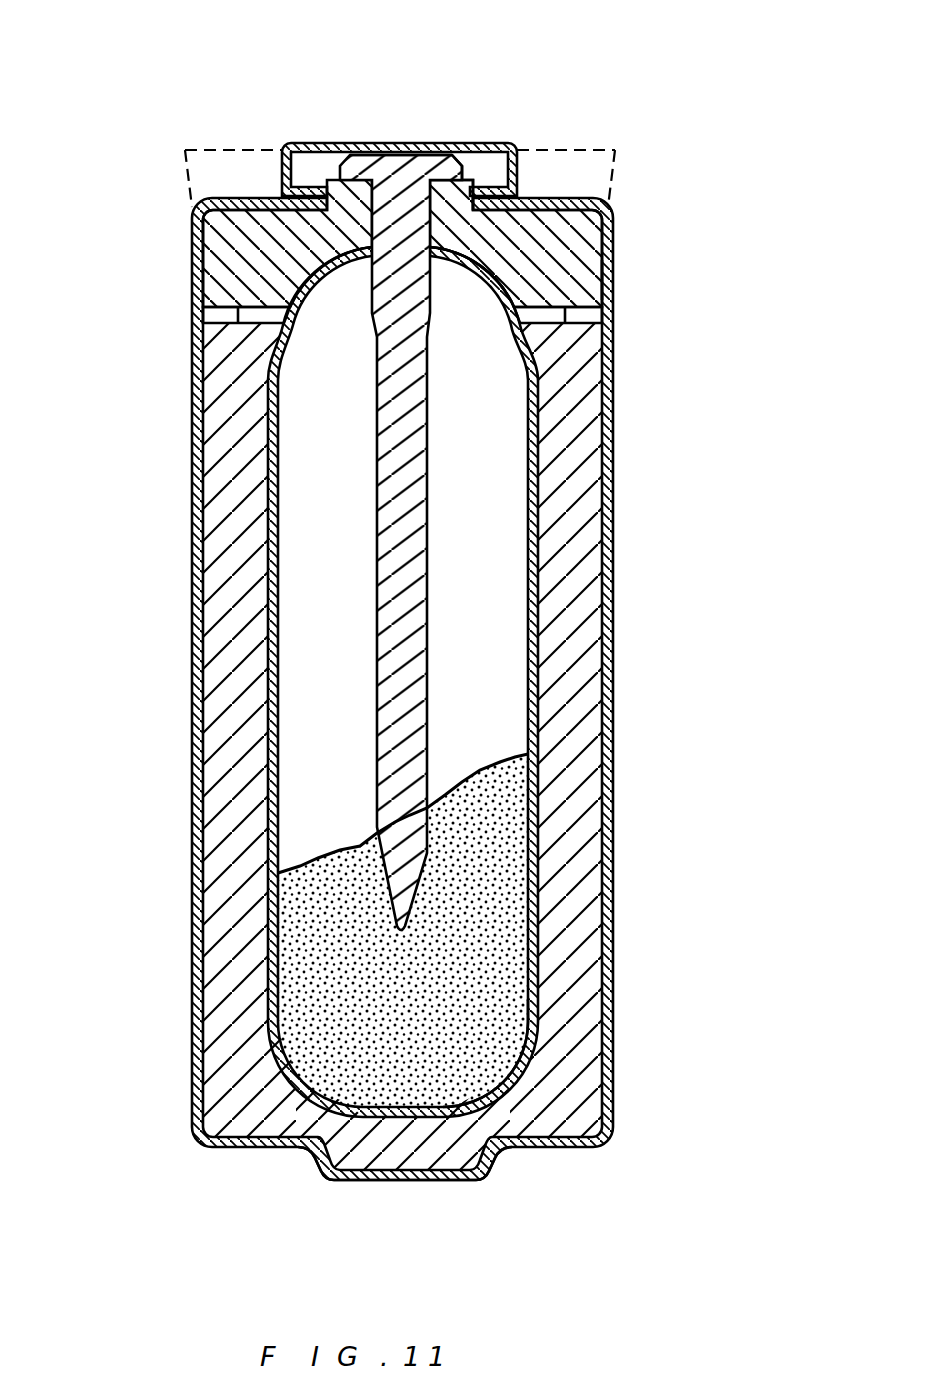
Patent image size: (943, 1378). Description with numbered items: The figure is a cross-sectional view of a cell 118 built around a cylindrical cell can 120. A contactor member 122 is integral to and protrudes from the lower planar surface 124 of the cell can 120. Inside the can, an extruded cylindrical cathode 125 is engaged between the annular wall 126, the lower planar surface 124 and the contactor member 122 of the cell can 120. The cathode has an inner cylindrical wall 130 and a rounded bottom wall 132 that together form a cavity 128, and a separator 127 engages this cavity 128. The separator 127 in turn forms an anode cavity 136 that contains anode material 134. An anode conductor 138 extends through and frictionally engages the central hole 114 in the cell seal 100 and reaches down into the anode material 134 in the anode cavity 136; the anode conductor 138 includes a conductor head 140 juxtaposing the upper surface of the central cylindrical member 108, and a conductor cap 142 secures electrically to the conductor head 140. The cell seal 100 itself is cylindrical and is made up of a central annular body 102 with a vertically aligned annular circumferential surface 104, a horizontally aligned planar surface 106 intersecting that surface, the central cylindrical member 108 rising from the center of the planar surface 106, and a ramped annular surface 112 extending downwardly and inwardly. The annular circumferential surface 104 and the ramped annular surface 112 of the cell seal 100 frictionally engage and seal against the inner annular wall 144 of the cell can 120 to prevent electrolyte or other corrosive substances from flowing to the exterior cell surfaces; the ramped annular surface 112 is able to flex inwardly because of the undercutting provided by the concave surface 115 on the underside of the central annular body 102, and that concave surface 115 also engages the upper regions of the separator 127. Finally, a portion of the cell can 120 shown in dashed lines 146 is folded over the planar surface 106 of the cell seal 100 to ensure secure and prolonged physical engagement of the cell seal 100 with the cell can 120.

The cell seal 100 is at (608, 260).
The central annular body 102 is at (215, 247).
The annular circumferential surface 104 is at (605, 235).
The planar surface 106 is at (283, 222).
The central cylindrical member 108 is at (452, 182).
The ramped annular surface 112 is at (595, 298).
The central hole 114 is at (457, 263).
The concave surface 115 is at (308, 295).
The cell 118 is at (640, 532).
The cell can 120 is at (270, 335).
The contactor member 122 is at (447, 1185).
The lower planar surface 124 is at (547, 1120).
The extruded cylindrical cathode 125 is at (220, 736).
The annular wall 126 is at (612, 830).
The separator 127 is at (278, 390).
The cavity 128 is at (248, 886).
The inner cylindrical wall 130 is at (280, 978).
The rounded bottom wall 132 is at (367, 1100).
The anode material 134 is at (522, 1018).
The anode cavity 136 is at (325, 1057).
The anode conductor 138 is at (432, 505).
The conductor head 140 is at (368, 165).
The conductor cap 142 is at (500, 146).
The inner annular wall 144 is at (610, 270).
The dashed lines 146 is at (240, 190).